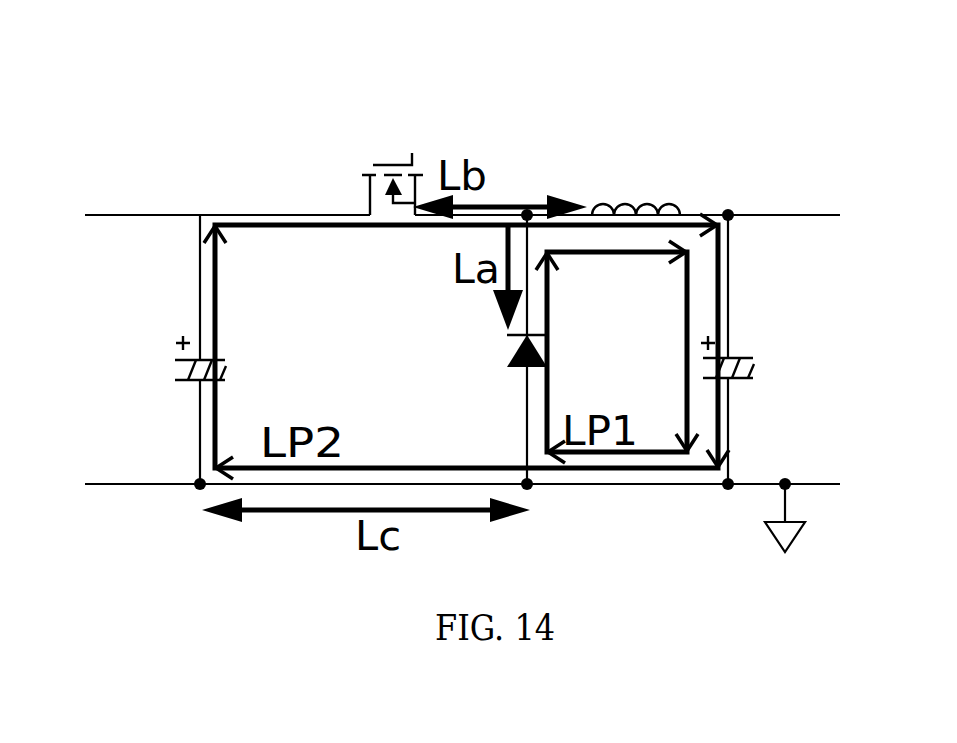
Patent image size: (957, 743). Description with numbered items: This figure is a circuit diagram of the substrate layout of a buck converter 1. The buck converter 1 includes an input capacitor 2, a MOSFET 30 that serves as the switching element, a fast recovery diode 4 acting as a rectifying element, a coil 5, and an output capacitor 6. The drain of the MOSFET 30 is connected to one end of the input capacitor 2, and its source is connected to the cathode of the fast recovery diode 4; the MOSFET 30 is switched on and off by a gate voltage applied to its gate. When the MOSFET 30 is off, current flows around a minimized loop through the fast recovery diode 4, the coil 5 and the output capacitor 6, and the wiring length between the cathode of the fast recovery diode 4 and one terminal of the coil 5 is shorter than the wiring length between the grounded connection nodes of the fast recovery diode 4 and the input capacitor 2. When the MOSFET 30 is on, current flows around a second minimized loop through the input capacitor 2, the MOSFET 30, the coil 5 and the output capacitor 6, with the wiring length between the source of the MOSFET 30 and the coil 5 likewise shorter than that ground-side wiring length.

The buck converter 1 is at (803, 46).
The MOSFET 30 is at (383, 158).
The coil (inductor) 5 is at (646, 200).
The fast recovery diode 4 is at (550, 347).
The input capacitor 2 is at (230, 370).
The output capacitor 6 is at (757, 368).